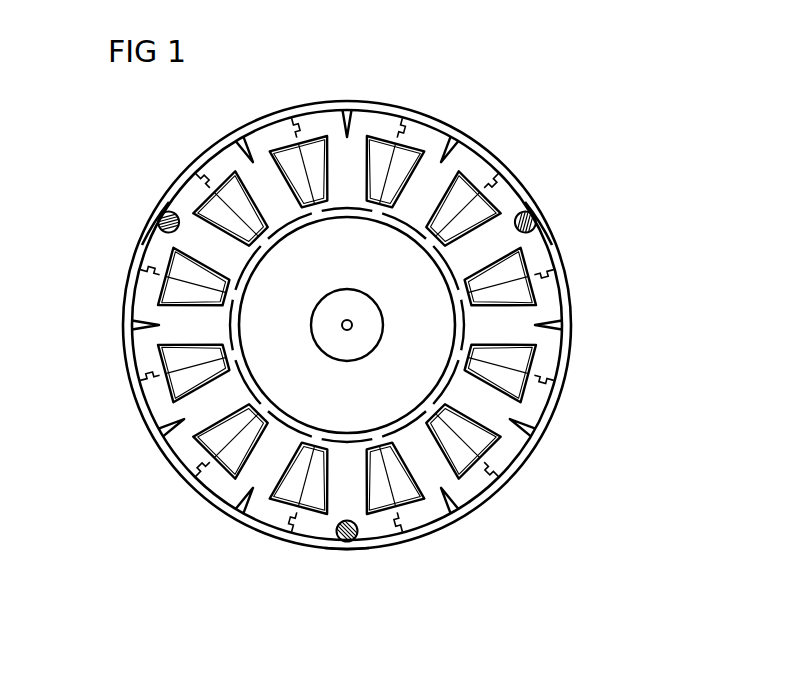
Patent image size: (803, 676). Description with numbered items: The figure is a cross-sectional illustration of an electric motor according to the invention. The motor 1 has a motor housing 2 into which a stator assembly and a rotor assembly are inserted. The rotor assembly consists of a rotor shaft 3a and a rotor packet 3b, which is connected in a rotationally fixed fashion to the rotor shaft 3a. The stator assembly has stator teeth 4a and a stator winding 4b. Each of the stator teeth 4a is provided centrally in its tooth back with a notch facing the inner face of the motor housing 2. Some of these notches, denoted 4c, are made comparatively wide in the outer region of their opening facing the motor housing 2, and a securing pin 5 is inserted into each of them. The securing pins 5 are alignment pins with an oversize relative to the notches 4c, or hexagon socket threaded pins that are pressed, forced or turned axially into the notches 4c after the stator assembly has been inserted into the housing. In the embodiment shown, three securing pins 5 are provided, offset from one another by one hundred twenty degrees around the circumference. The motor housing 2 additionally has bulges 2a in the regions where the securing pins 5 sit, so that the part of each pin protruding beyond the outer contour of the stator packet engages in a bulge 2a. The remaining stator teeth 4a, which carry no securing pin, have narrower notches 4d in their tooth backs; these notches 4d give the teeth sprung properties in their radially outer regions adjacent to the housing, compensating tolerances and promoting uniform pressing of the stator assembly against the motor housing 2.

The motor 1 is at (594, 324).
The motor housing 2 is at (445, 120).
The bulges 2a is at (152, 212).
The rotor shaft 3a is at (311, 322).
The rotor packet 3b is at (239, 313).
The stator teeth 4a is at (206, 150).
The stator winding 4b is at (380, 145).
The notches 4c is at (176, 229).
The notches 4d is at (160, 432).
The securing pins 5 is at (148, 237).